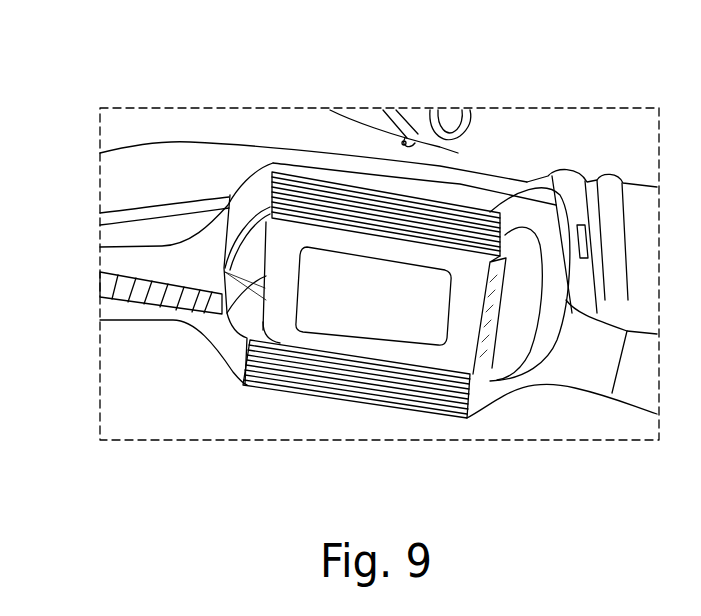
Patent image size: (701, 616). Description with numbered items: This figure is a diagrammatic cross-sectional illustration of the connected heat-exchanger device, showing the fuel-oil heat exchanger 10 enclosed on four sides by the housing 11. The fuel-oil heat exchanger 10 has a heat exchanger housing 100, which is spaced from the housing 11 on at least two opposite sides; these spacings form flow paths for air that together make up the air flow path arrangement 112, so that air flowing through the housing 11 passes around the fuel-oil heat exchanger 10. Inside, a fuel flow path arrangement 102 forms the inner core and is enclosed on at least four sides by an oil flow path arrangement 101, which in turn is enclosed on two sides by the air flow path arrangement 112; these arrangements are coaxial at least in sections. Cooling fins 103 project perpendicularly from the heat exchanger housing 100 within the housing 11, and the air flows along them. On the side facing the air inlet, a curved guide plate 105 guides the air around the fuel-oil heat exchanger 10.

The fuel-oil heat exchanger 10 is at (228, 341).
The housing 11 is at (490, 418).
The heat exchanger housing 100 is at (267, 200).
The oil flow path arrangement 101 is at (282, 246).
The fuel flow path arrangement 102 is at (322, 318).
The cooling fins 103 is at (353, 375).
The guide plate 105 is at (512, 240).
The air flow path arrangement 112 is at (312, 200).